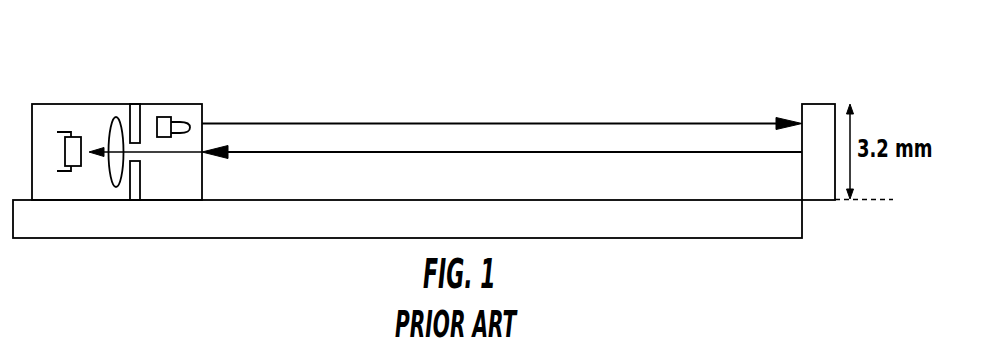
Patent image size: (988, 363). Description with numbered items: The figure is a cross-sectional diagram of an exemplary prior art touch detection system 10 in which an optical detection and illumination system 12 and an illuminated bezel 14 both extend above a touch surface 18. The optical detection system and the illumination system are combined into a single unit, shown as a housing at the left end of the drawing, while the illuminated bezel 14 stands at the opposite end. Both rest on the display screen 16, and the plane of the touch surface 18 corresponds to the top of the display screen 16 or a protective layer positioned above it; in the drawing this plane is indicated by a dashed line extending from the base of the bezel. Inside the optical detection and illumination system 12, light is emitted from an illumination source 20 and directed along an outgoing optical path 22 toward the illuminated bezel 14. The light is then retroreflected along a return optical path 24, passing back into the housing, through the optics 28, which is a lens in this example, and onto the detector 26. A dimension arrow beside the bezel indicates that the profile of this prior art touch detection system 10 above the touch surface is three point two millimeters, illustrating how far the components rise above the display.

The touch detection system 10 is at (472, 123).
The optical detection and illumination system 12 is at (117, 119).
The illuminated bezel 14 is at (841, 124).
The display screen 16 is at (407, 219).
The touch surface 18 is at (883, 198).
The illumination source 20 is at (179, 94).
The outgoing optical path 22 is at (502, 101).
The return optical path 24 is at (445, 170).
The detector 26 is at (81, 111).
The optics 28 is at (130, 119).